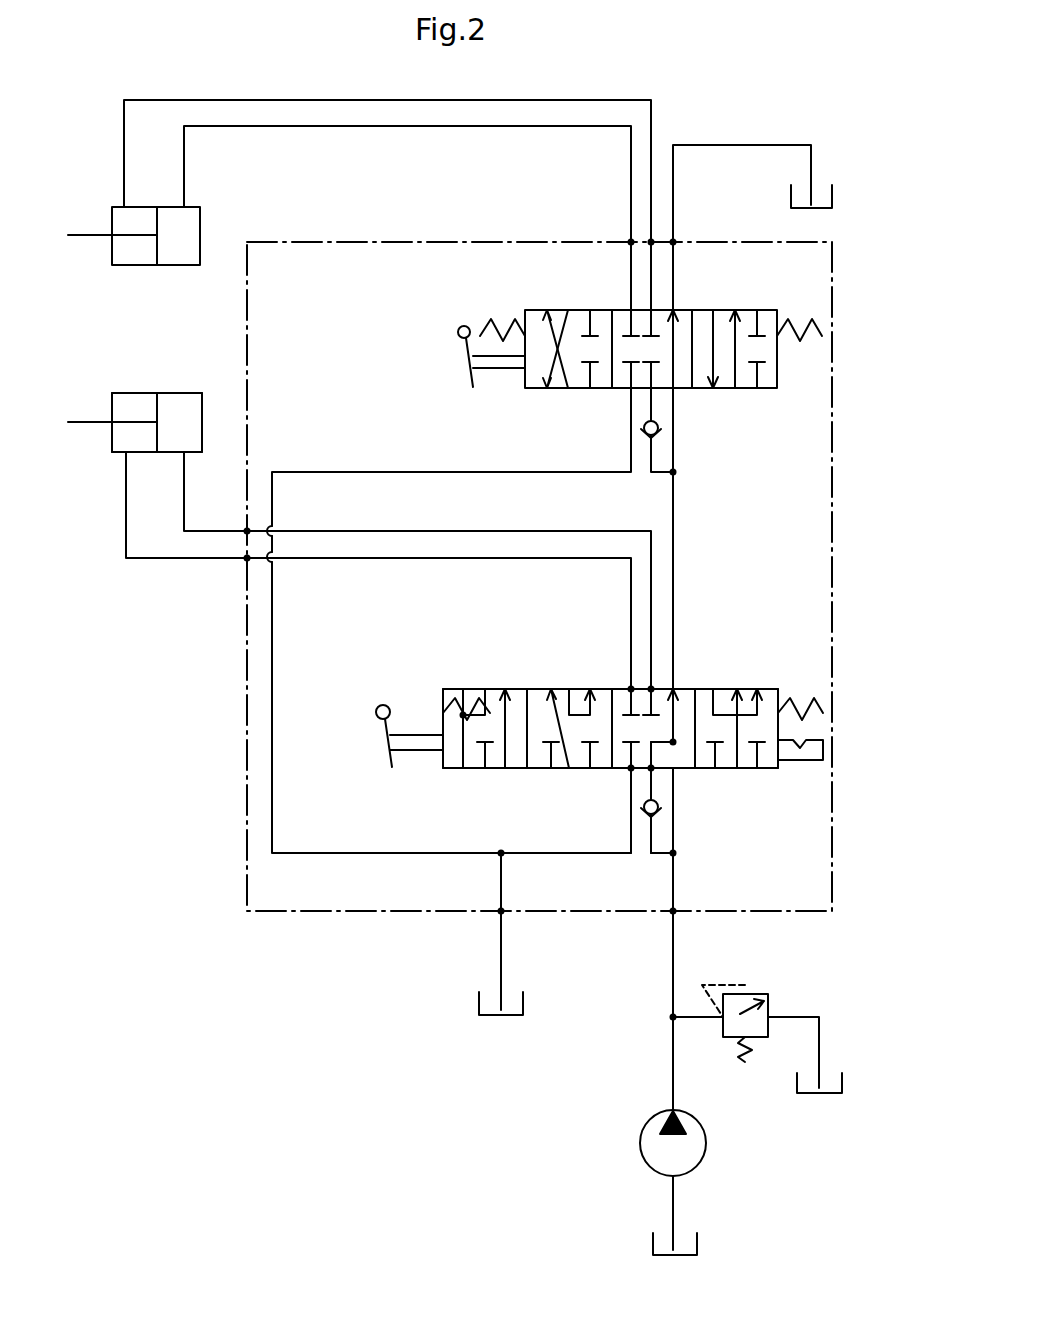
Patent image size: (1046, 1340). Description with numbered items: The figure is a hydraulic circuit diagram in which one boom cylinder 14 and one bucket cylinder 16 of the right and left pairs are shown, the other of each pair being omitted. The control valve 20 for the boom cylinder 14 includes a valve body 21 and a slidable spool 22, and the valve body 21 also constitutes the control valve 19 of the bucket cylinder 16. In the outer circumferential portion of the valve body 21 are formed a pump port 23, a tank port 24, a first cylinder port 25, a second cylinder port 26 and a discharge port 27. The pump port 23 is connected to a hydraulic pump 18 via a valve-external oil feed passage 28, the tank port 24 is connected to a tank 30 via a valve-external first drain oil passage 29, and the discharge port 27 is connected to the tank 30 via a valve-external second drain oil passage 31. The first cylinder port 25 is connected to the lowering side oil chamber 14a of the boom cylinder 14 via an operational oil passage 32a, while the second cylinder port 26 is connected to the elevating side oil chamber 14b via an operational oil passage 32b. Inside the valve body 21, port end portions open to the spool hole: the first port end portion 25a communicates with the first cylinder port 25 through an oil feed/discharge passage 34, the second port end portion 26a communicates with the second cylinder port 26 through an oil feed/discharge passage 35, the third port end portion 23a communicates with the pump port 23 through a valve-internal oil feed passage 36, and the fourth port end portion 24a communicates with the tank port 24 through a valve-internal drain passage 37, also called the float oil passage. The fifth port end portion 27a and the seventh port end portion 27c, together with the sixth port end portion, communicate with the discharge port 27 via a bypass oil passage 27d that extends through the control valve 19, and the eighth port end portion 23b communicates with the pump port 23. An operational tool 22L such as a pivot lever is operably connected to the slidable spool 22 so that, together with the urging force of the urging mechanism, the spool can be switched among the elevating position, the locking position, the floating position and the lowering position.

The boom cylinder 14 is at (147, 393).
The lowering side oil chamber 14a is at (130, 405).
The elevating side oil chamber 14b is at (175, 405).
The bucket cylinder 16 is at (200, 235).
The hydraulic pump 18 is at (640, 1143).
The control valve 19 is at (559, 295).
The control valve 20 is at (450, 660).
The valve body 21 is at (367, 240).
The slidable spool 22 is at (520, 689).
The operational tool 22L is at (381, 731).
The pump port 23 is at (672, 913).
The third port end portion 23a is at (675, 775).
The eighth port end portion 23b is at (675, 772).
The tank port 24 is at (500, 913).
The fourth port end portion 24a is at (631, 770).
The first cylinder port 25 is at (245, 560).
The first port end portion 25a is at (631, 689).
The second cylinder port 26 is at (245, 529).
The second port end portion 26a is at (651, 689).
The discharge port 27 is at (673, 242).
The fifth port end portion 27a is at (673, 689).
The seventh port end portion 27c is at (662, 755).
The bypass oil passage 27d is at (676, 520).
The valve-external oil feed passage 28 is at (672, 987).
The valve-external first drain oil passage 29 is at (502, 953).
The tank 30 is at (791, 196).
The valve-external second drain oil passage 31 is at (740, 145).
The operational oil passage 32a is at (120, 507).
The operational oil passage 32b is at (180, 493).
The oil feed/discharge passage 34 is at (405, 560).
The oil feed/discharge passage 35 is at (408, 530).
The valve-internal oil feed passage 36 is at (651, 780).
The valve-internal drain passage 37 is at (583, 855).